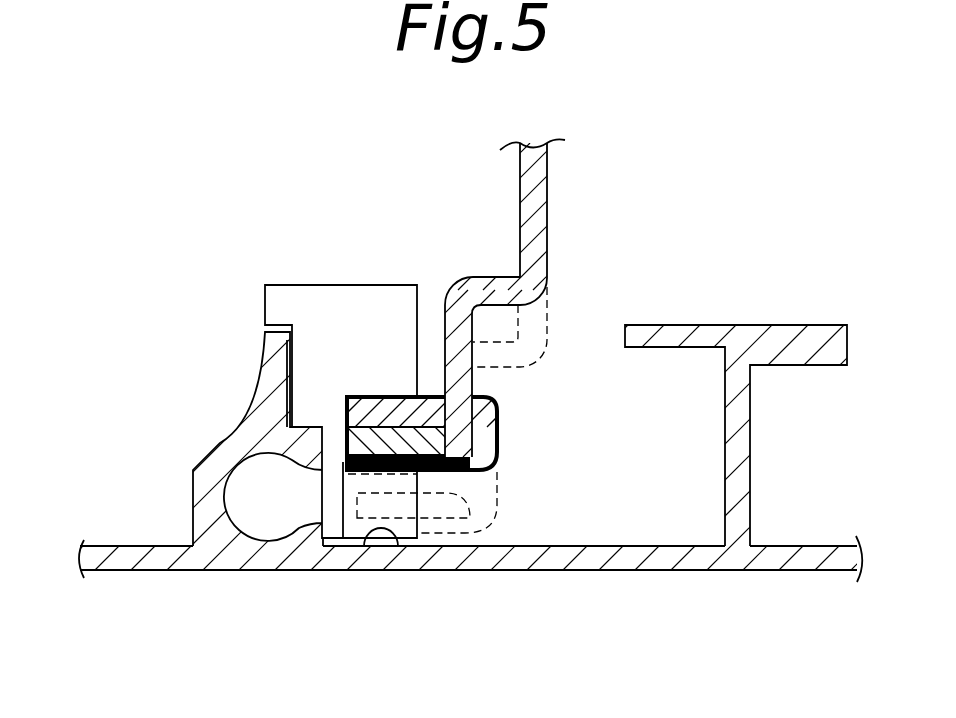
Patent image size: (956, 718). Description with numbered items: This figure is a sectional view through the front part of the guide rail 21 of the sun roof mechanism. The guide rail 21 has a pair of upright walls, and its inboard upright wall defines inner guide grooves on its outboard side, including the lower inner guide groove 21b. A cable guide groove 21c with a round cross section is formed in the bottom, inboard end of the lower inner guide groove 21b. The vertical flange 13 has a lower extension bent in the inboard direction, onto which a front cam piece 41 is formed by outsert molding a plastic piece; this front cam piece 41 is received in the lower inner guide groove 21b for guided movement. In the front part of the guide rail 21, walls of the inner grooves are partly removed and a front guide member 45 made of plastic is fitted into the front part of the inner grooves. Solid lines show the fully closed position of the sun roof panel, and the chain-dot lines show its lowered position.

The vertical flange 13 is at (568, 188).
The guide rail 21 is at (233, 413).
The lower inner guide groove 21b is at (397, 545).
The cable guide groove 21c is at (306, 512).
The front cam piece 41 is at (490, 418).
The front guide member 45 is at (353, 277).